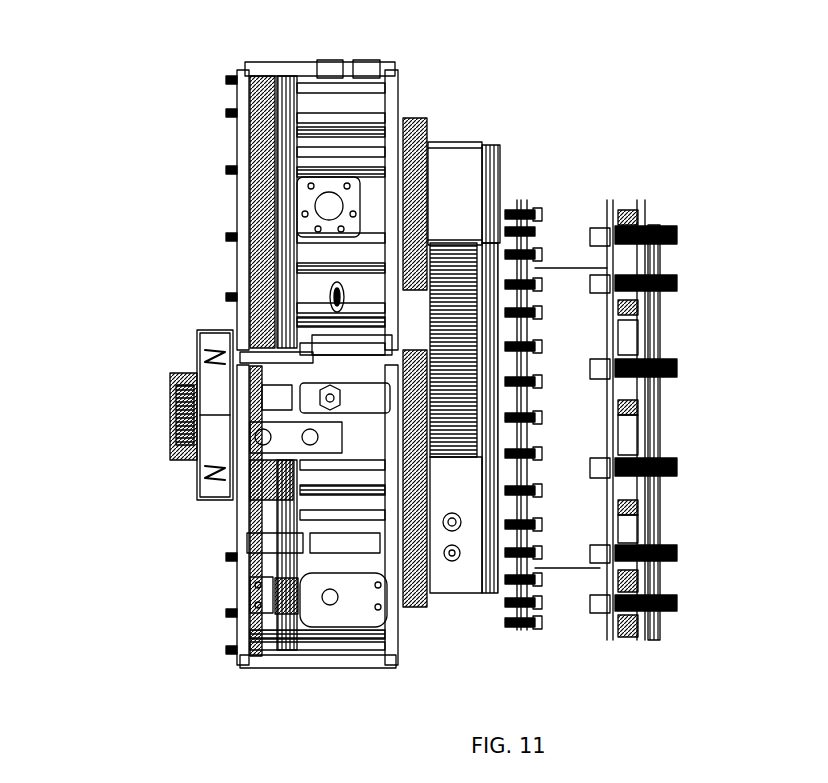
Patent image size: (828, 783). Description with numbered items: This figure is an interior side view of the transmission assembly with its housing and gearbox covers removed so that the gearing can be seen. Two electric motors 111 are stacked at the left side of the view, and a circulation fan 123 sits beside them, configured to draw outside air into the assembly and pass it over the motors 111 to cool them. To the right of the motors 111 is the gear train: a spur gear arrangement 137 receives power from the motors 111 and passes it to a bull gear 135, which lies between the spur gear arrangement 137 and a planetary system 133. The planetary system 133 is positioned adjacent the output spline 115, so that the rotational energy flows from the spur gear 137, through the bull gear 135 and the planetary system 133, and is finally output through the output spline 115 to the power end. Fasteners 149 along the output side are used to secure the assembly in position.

The electric motors 111 is at (205, 124).
The circulation fan 123 is at (170, 398).
The spur gear arrangement 137 is at (460, 140).
The bull gear 135 is at (458, 250).
The planetary system 133 is at (568, 267).
The fasteners 149 is at (668, 229).
The output spline 115 is at (665, 430).